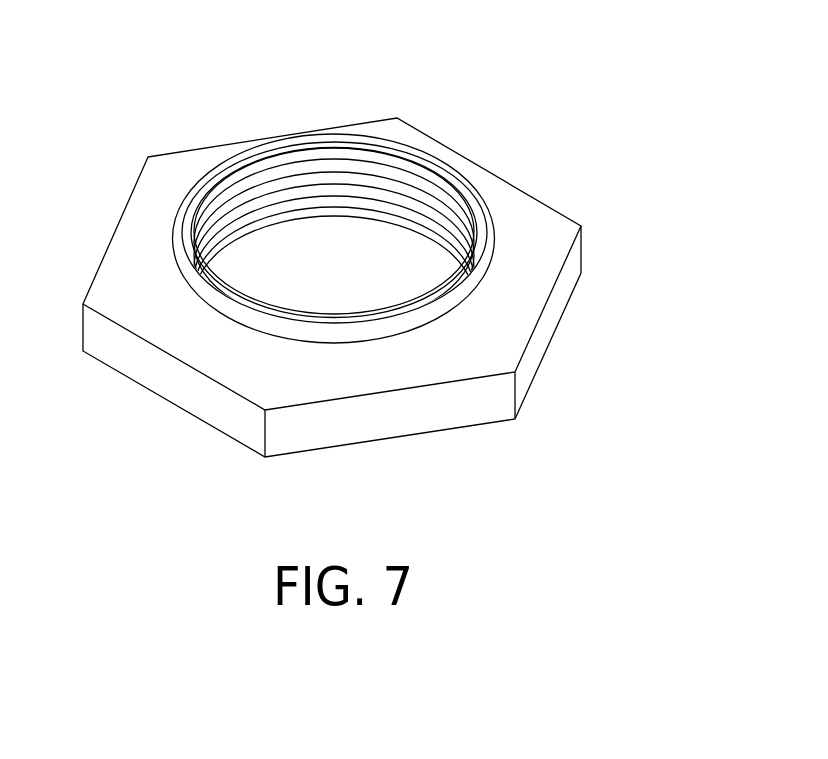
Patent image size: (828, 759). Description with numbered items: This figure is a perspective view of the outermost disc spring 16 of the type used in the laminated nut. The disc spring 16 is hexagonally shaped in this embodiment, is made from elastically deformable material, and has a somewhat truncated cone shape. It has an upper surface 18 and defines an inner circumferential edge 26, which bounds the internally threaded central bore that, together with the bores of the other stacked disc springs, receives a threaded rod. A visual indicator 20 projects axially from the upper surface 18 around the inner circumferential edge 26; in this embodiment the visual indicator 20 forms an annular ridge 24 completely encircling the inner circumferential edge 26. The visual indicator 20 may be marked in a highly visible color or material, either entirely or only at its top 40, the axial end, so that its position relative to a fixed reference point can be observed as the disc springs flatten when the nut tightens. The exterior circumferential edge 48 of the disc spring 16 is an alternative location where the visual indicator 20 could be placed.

The outermost disc spring 16 is at (376, 233).
The upper surface 18 is at (590, 128).
The visual indicator 20 is at (202, 293).
The annular ridge 24 is at (382, 142).
The inner circumferential edge 26 is at (334, 208).
The top 40 is at (175, 227).
The exterior circumferential edge 48 is at (570, 268).